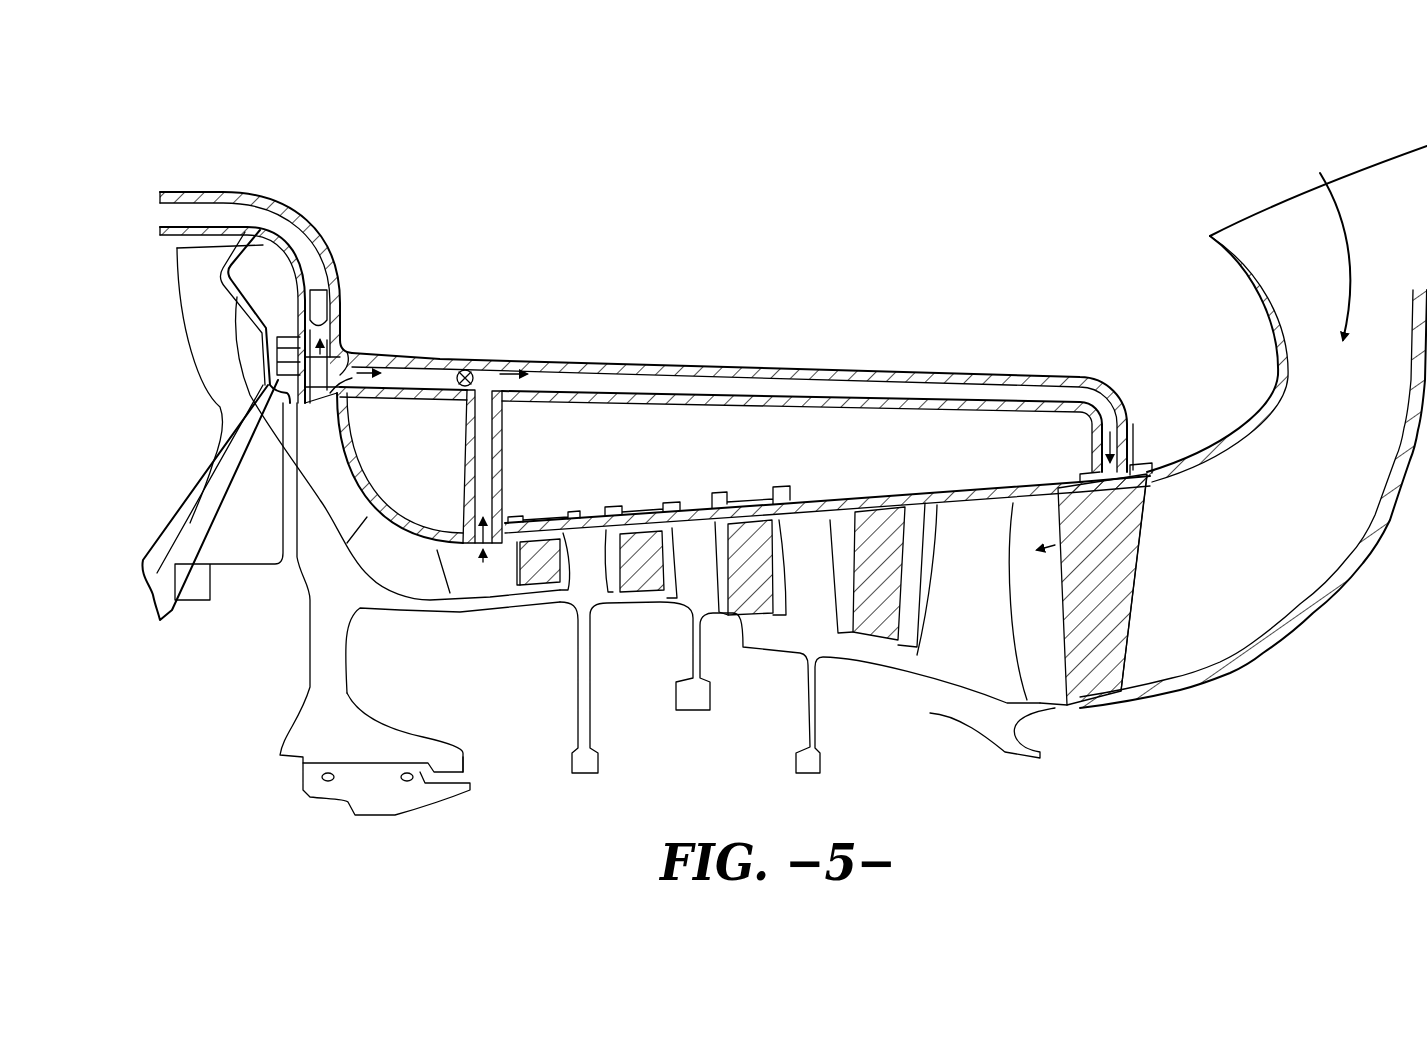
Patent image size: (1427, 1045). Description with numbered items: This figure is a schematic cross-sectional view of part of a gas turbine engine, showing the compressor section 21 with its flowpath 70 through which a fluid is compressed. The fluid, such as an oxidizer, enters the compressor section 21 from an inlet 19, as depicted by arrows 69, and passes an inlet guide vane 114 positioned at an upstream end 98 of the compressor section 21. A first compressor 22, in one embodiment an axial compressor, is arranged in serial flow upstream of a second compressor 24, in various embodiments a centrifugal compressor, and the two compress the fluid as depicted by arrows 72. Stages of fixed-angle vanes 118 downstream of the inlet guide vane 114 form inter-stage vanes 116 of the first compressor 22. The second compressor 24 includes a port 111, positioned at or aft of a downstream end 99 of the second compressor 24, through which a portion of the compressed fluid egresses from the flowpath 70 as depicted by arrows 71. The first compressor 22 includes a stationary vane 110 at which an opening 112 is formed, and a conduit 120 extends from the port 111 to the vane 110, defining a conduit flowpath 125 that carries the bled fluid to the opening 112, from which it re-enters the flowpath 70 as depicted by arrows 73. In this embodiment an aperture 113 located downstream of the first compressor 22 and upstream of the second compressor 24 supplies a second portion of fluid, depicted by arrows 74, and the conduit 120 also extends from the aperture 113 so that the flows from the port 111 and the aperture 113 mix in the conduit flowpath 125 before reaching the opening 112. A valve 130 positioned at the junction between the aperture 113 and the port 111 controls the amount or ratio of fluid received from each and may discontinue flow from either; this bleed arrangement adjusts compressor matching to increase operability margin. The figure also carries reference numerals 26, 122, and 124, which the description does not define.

The inlet 19 is at (1372, 158).
The compressor section 21 is at (795, 250).
The first compressor 22 is at (830, 470).
The second compressor 24 is at (385, 482).
The combustor 26 is at (135, 165).
The arrows 69 is at (1357, 280).
The flowpath 70 is at (318, 258).
The arrows 71 is at (343, 377).
The arrows 72 is at (327, 360).
The arrows 73 is at (1080, 528).
The arrows 74 is at (487, 560).
The upstream end 98 is at (1295, 179).
The downstream end 99 is at (124, 246).
The vane 110 is at (547, 515).
The port 111 is at (343, 362).
The opening 112 is at (1057, 655).
The aperture 113 is at (473, 555).
The inlet guide vane 114 is at (1123, 555).
The inter-stage vanes 116 is at (892, 522).
The vanes 118 is at (752, 492).
The conduit 120 is at (546, 358).
The lower ring 122 is at (968, 655).
The disk 124 is at (390, 560).
The conduit flowpath 125 is at (664, 388).
The valve 130 is at (467, 366).